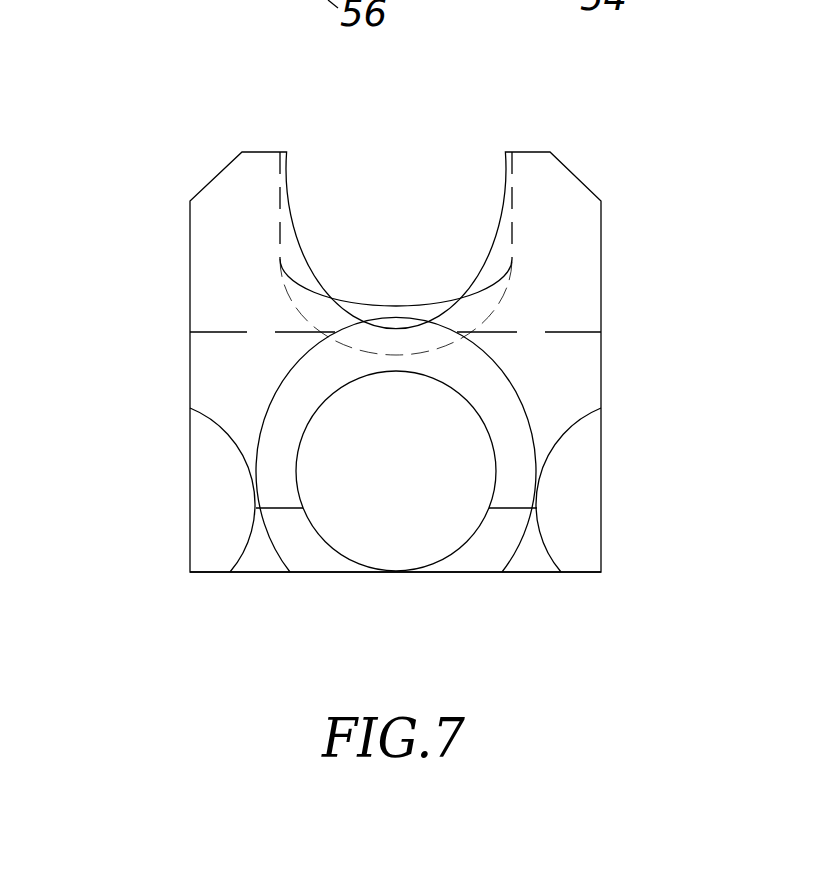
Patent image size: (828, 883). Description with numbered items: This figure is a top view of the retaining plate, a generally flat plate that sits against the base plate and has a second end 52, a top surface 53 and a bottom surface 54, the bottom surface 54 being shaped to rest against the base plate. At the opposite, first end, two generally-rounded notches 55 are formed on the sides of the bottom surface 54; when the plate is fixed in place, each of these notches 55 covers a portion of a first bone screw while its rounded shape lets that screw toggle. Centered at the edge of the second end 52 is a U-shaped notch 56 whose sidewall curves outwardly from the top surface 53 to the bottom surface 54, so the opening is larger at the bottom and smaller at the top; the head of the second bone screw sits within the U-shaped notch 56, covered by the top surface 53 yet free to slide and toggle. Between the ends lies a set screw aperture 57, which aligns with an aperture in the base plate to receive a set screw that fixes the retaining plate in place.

The second end 52 is at (263, 152).
The top surface 53 is at (572, 372).
The bottom surface 54 is at (537, 573).
The generally-rounded notches 55 is at (220, 500).
The U-shaped notch 56 is at (488, 221).
The set screw aperture 57 is at (418, 540).